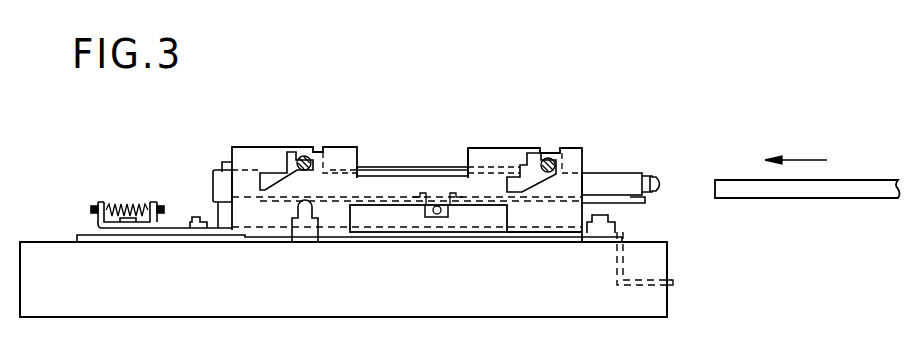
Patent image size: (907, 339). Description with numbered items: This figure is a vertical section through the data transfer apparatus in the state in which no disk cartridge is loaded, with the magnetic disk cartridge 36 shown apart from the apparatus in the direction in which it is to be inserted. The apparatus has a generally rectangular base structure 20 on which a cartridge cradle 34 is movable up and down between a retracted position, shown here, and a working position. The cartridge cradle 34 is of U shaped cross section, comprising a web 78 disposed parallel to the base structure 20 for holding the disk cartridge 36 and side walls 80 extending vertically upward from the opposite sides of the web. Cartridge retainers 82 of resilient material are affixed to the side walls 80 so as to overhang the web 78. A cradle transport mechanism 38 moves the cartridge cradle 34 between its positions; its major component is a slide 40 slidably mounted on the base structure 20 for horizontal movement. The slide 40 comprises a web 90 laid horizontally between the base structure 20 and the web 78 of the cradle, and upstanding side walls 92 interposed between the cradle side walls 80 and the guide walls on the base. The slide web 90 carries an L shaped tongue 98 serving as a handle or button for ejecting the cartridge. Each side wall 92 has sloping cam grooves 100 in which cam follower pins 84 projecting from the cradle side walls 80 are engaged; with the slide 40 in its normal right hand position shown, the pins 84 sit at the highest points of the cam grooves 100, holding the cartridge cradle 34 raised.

The base structure 20 is at (42, 248).
The cartridge cradle 34 is at (651, 168).
The magnetic disk cartridge 36 is at (870, 186).
The cradle transport mechanism 38 is at (505, 141).
The slide 40 is at (463, 143).
The web 78 is at (645, 203).
The side walls 80 is at (600, 180).
The cartridge retainers 82 is at (405, 167).
The pins 84 is at (306, 156).
The web 90 is at (488, 227).
The side walls 92 is at (342, 152).
The L shaped tongue 98 is at (673, 283).
The cam grooves 100 is at (286, 161).